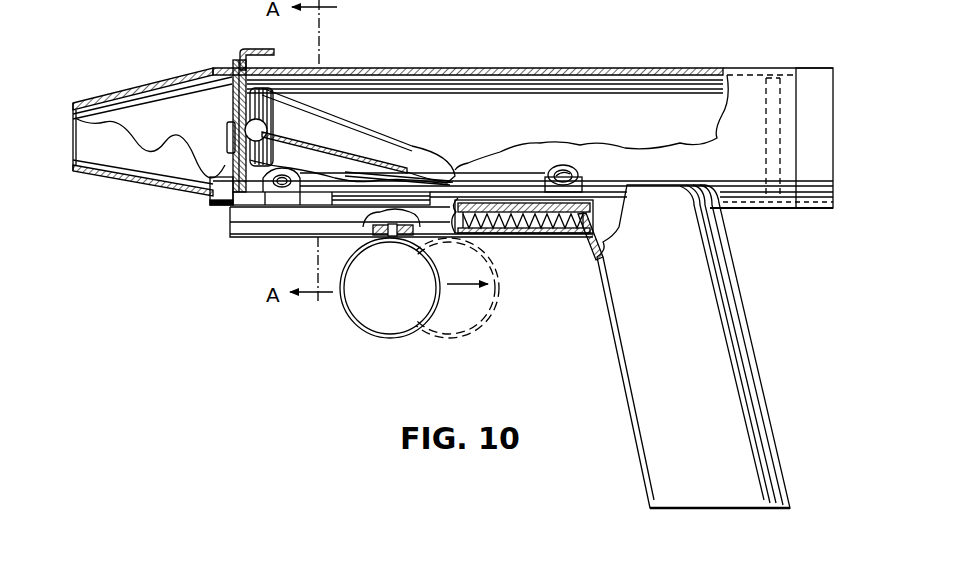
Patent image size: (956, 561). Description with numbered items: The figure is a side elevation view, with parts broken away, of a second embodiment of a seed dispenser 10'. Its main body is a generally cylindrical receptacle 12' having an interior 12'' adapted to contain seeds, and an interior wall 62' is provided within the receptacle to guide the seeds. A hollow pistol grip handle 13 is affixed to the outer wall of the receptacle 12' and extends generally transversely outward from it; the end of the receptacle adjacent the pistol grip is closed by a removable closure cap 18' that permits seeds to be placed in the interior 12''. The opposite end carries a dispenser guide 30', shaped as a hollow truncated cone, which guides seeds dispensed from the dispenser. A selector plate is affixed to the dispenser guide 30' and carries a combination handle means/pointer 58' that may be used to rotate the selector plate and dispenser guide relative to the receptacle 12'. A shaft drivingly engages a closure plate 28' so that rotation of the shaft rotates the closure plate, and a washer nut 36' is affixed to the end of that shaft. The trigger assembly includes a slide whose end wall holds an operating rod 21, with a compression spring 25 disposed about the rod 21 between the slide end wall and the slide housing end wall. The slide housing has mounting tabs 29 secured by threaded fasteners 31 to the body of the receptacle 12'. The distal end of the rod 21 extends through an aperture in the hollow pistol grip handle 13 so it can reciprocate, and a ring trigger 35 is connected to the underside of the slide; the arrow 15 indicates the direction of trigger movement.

The dispenser 10' is at (401, 267).
The receptacle 12' is at (523, 119).
The interior 12'' is at (489, 129).
The pistol grip handle 13 is at (740, 368).
The direction of trigger movement 15 is at (508, 243).
The closure cap 18' is at (783, 115).
The operating rod 21 is at (608, 242).
The compression spring 25 is at (542, 223).
The closure plate 28' is at (207, 119).
The mounting tabs 29 is at (547, 178).
The dispenser guide 30' is at (152, 146).
The threaded fasteners 31 is at (580, 182).
The ring trigger 35 is at (377, 337).
The washer nut 36' is at (220, 127).
The handle means/pointer 58' is at (247, 41).
The interior wall 62' is at (358, 136).